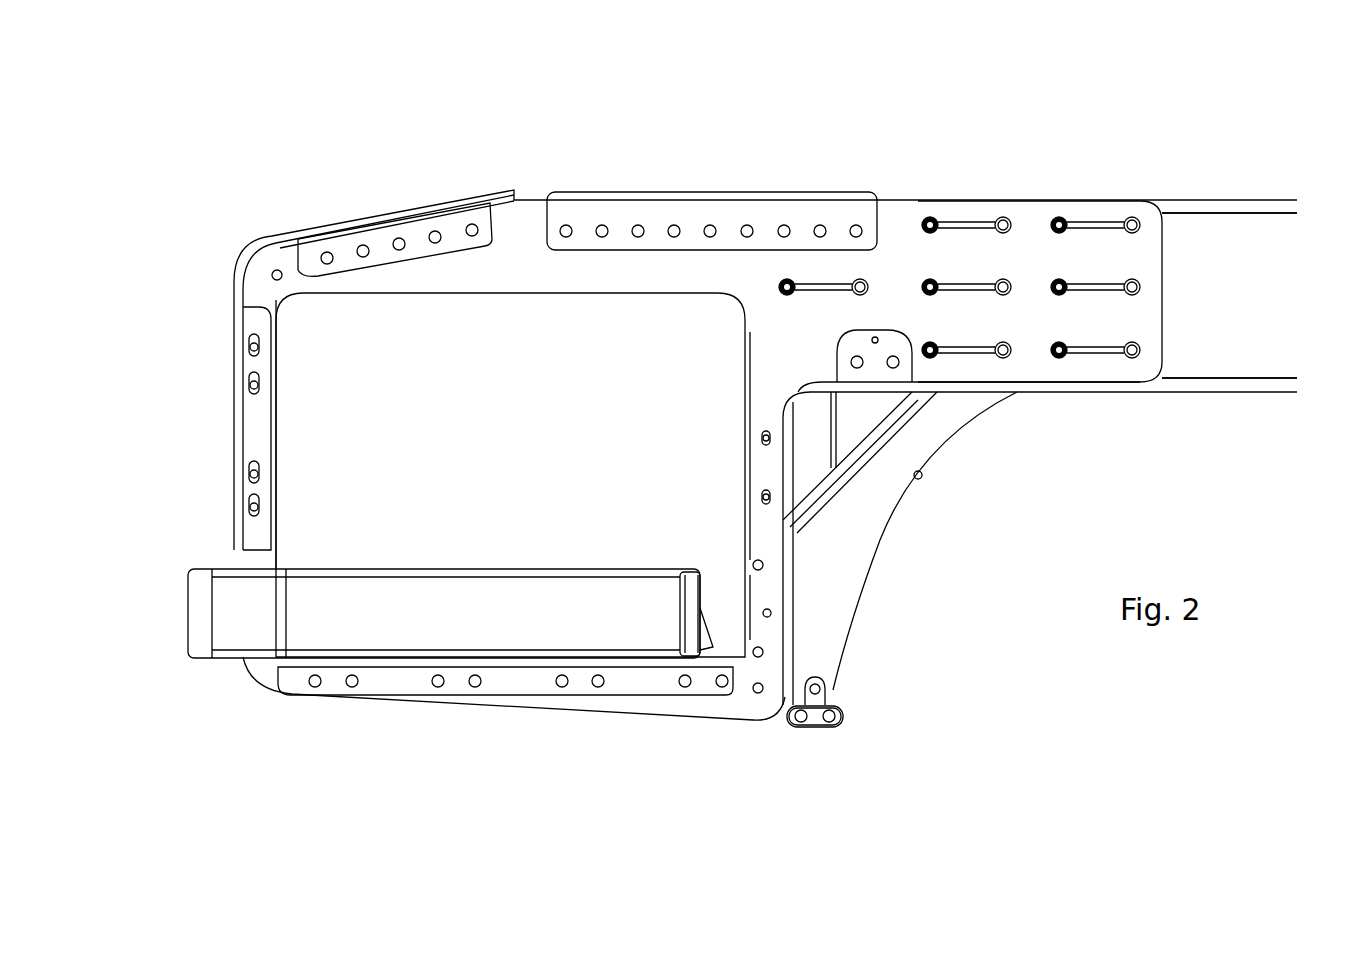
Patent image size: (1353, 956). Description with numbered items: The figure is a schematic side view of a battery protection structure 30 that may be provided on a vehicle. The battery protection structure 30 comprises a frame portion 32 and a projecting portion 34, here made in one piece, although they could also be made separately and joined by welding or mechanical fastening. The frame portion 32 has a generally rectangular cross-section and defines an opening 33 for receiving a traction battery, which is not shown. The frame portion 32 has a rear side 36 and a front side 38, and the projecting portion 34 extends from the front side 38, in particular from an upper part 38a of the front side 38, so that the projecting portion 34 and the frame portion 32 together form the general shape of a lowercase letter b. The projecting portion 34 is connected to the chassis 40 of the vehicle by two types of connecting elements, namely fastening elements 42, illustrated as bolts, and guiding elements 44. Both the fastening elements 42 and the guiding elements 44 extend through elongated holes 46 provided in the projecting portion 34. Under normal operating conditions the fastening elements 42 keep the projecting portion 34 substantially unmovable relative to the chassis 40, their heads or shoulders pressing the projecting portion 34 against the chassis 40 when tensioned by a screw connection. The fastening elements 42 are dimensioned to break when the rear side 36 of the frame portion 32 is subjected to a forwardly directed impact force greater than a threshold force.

The battery protection structure 30 is at (243, 121).
The frame portion 32 is at (514, 246).
The opening 33 is at (645, 462).
The projecting portion 34 is at (1033, 250).
The rear side 36 is at (236, 338).
The front side 38 is at (762, 417).
The upper part 38a is at (741, 280).
The chassis 40 is at (1188, 280).
The fastening elements 42 is at (932, 216).
The guiding elements 44 is at (1003, 217).
The elongated holes 46 is at (963, 222).